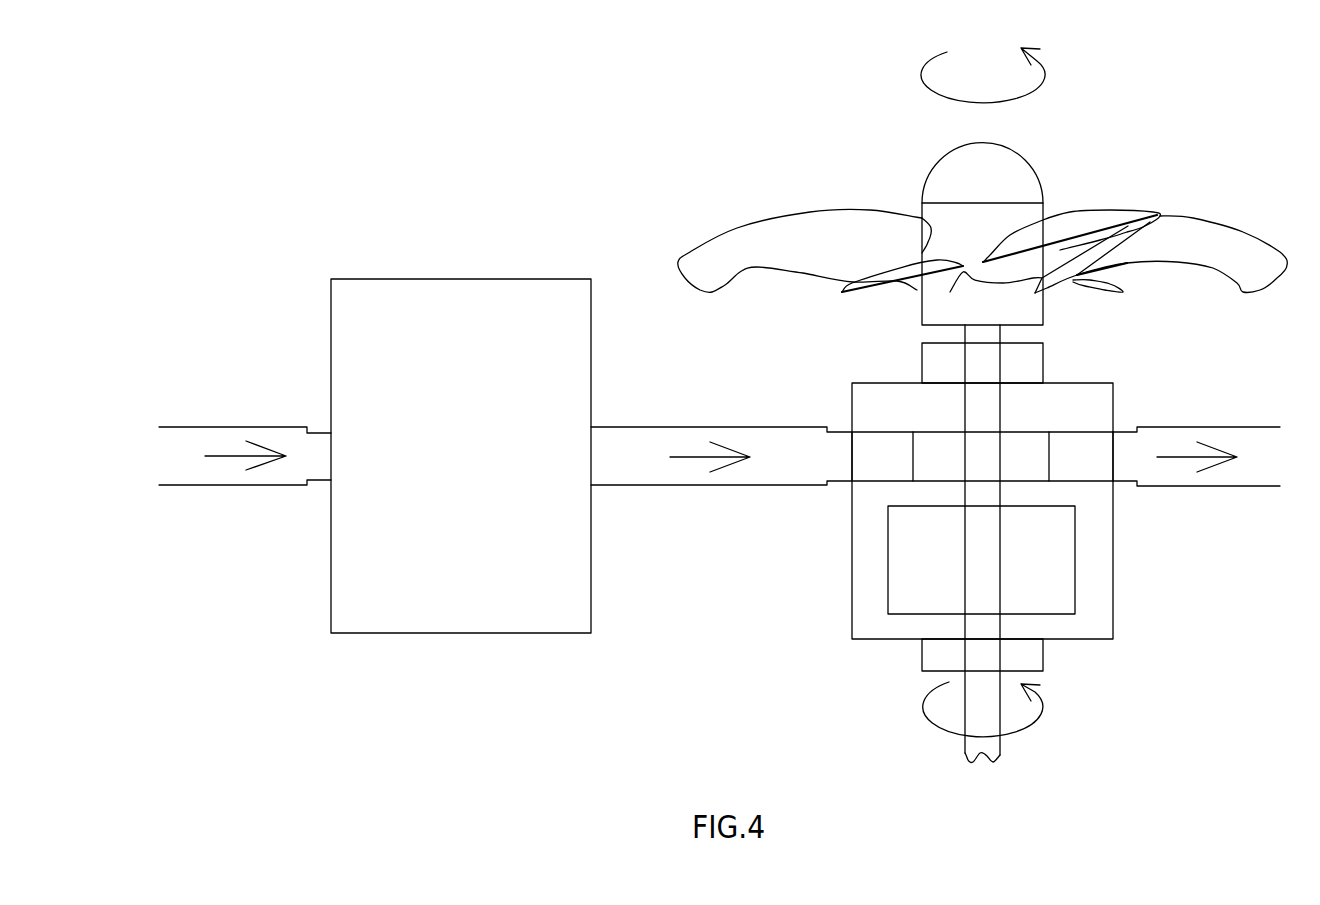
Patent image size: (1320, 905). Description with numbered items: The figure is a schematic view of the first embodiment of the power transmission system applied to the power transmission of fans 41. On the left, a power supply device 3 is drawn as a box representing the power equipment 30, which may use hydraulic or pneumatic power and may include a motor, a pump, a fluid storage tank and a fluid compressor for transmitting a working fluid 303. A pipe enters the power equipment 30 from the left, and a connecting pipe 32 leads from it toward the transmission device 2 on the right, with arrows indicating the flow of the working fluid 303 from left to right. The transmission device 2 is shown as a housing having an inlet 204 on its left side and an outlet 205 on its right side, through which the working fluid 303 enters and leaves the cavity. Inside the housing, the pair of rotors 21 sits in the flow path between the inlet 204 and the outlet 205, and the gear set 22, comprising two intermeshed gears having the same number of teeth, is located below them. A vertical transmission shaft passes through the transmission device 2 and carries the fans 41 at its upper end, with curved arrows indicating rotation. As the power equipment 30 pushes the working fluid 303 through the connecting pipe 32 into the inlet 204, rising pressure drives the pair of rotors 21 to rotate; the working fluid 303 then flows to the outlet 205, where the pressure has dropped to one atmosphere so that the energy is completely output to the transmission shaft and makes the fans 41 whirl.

The transmission device 2 is at (1093, 400).
The power supply device 3 is at (376, 250).
The pair of rotors 21 is at (930, 453).
The gear set 22 is at (1053, 588).
The power equipment 30 is at (353, 299).
The connecting pipe 32 is at (710, 485).
The fans 41 is at (1180, 248).
The inlet 204 is at (851, 462).
The outlet 205 is at (1113, 457).
The working fluid 303 is at (166, 454).